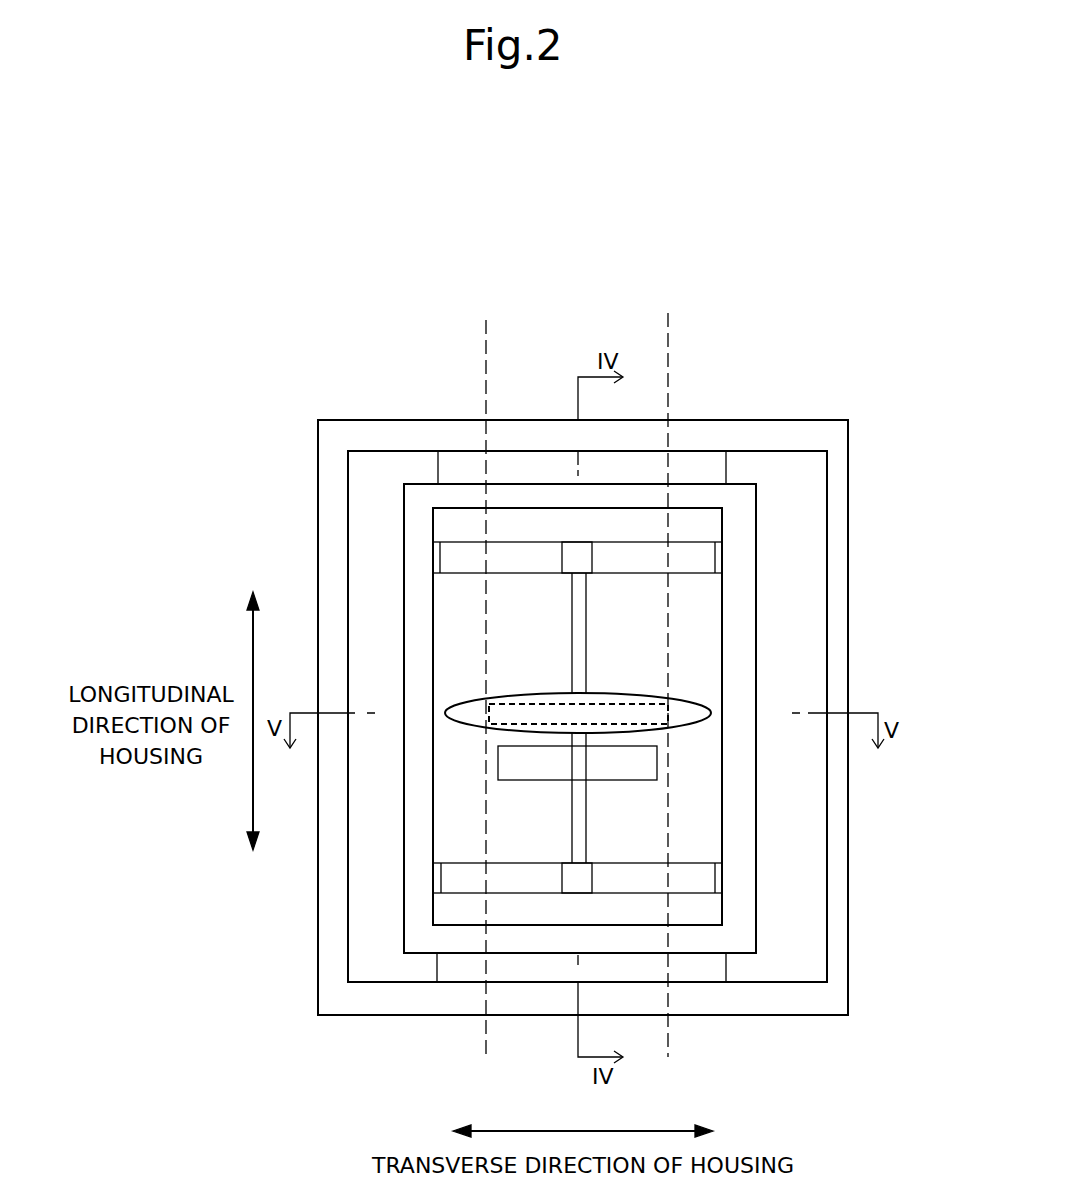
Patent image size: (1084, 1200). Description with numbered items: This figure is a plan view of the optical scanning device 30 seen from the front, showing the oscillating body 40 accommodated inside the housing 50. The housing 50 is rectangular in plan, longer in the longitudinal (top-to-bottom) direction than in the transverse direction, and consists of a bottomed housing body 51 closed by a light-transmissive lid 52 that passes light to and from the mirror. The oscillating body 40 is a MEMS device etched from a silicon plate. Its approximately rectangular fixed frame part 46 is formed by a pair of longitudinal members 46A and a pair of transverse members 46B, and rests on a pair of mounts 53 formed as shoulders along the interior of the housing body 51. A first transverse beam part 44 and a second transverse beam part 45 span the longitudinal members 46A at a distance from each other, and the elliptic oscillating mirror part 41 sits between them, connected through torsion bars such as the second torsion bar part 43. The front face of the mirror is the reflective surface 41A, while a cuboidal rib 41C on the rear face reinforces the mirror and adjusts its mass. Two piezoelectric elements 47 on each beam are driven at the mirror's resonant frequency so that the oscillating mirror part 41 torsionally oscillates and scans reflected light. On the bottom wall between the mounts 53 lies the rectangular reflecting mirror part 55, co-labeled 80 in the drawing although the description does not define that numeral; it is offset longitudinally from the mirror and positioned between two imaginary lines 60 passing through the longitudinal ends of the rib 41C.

The optical scanning device 30 is at (307, 368).
The oscillating body 40 is at (758, 547).
The oscillating mirror part 41 is at (648, 697).
The reflective surface 41A is at (686, 713).
The rib 41C is at (528, 703).
The second torsion bar part 43 is at (571, 840).
The first transverse beam part 44 is at (573, 541).
The second transverse beam part 45 is at (580, 894).
The fixed frame part 46 is at (399, 601).
The longitudinal members 46A is at (417, 676).
The transverse members 46B is at (607, 500).
The piezoelectric elements 47 is at (630, 557).
The housing 50 is at (620, 675).
The housing body 51 is at (837, 780).
The lid 52 is at (880, 758).
The mounts 53 is at (437, 967).
The reflecting mirror part 55 is at (611, 765).
The imaginary lines 60 is at (668, 368).
The drive unit 80 is at (581, 787).